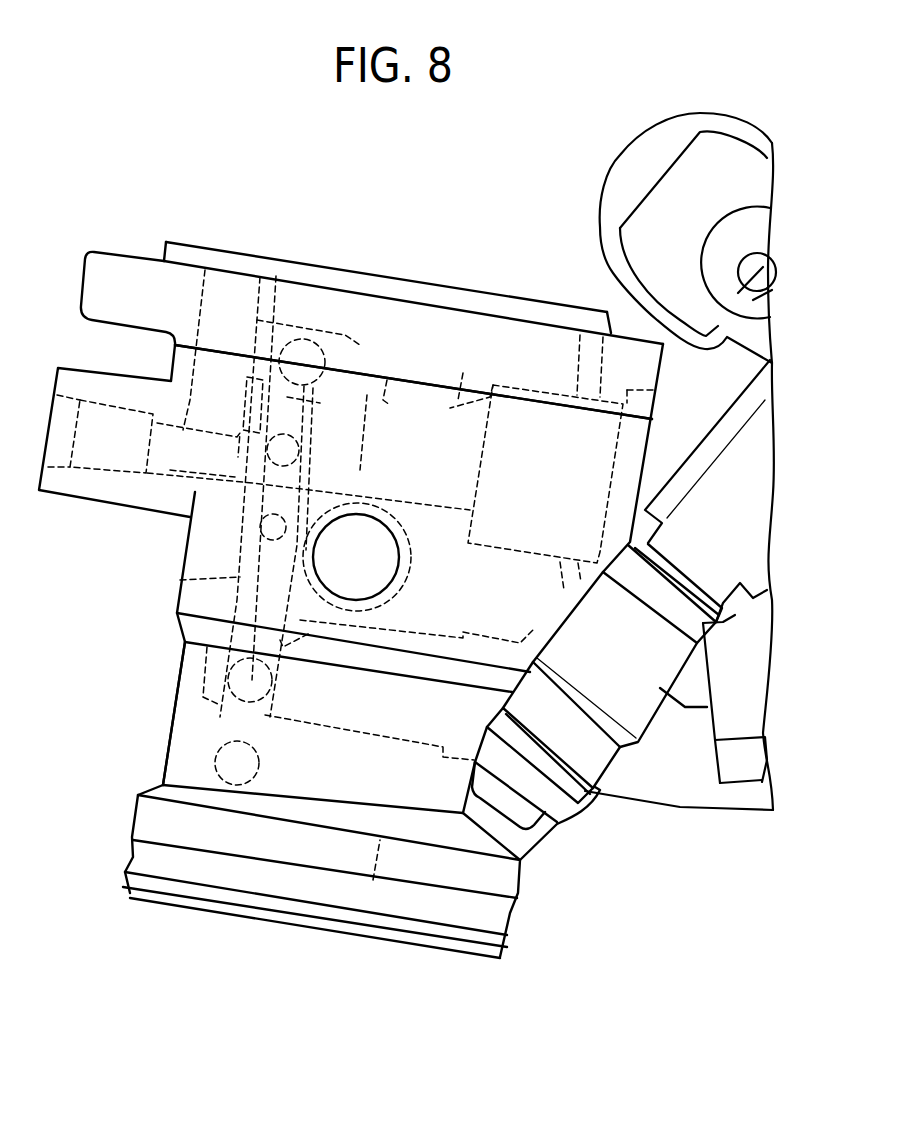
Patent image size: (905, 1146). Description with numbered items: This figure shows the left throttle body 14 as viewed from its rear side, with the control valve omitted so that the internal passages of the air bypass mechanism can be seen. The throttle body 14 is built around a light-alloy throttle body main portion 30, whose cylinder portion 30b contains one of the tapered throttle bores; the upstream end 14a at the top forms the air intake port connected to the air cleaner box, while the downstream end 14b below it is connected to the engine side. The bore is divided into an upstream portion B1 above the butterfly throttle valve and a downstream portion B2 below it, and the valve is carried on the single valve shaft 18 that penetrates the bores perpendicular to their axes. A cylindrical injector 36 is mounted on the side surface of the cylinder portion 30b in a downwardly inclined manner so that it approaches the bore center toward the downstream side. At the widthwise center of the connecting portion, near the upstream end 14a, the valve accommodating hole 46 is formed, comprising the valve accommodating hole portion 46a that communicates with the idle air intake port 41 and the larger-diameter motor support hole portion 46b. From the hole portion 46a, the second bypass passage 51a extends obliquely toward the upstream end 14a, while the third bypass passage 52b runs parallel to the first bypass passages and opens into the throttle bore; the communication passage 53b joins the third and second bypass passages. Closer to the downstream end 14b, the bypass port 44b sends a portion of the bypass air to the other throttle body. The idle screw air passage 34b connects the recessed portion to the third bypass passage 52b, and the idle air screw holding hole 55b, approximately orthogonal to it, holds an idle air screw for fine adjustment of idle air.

The throttle body 14 is at (108, 247).
The upstream end 14a is at (513, 295).
The downstream end 14b is at (429, 940).
The throttle body main portion 30 is at (180, 240).
The cylinder portion 30b is at (170, 735).
The idle screw air passage 34b is at (210, 392).
The idle air intake port 41 is at (200, 313).
The bypass port 44b is at (330, 727).
The valve accommodating hole 46 is at (438, 384).
The valve accommodating hole portion 46a is at (385, 393).
The motor support hole portion 46b is at (555, 393).
The second bypass passage 51a is at (300, 355).
The third bypass passage 52b is at (240, 577).
The communication passage 53b is at (366, 395).
The idle air screw holding hole 55b is at (163, 470).
The valve shaft 18 is at (382, 563).
The injector 36 is at (658, 653).
The upstream portion B1 is at (463, 373).
The downstream portion B2 is at (373, 880).